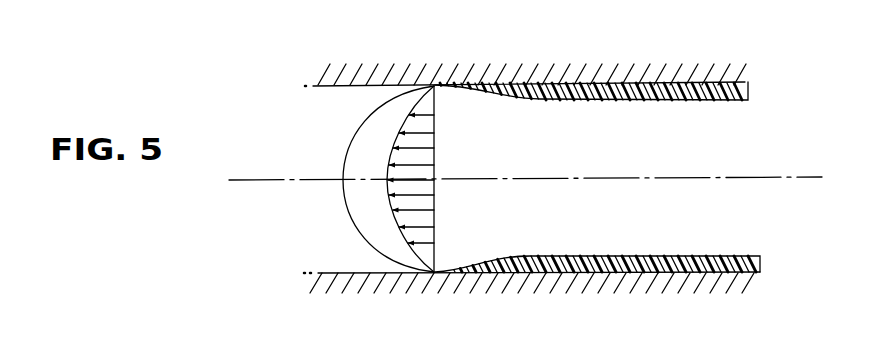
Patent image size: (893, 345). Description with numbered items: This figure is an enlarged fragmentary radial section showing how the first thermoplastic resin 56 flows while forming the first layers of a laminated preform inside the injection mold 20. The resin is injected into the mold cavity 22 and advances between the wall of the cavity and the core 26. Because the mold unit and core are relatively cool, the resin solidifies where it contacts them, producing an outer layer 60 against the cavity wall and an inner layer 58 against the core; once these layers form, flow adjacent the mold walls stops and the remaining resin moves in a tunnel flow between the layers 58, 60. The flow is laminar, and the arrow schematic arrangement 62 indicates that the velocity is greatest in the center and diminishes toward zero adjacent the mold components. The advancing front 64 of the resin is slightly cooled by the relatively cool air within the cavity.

The injection mold 20 is at (618, 63).
The mold cavity 22 is at (346, 255).
The core 26 is at (598, 289).
The first thermoplastic resin 56 is at (668, 235).
The inner layer 58 is at (738, 268).
The outer layer 60 is at (725, 82).
The arrow schematic arrangement 62 is at (438, 158).
The advancing front 64 is at (364, 152).